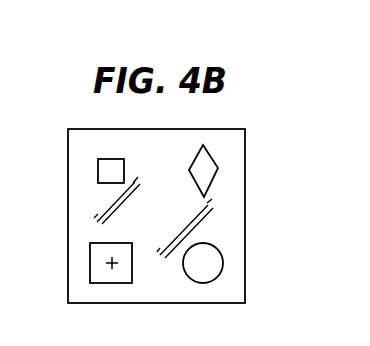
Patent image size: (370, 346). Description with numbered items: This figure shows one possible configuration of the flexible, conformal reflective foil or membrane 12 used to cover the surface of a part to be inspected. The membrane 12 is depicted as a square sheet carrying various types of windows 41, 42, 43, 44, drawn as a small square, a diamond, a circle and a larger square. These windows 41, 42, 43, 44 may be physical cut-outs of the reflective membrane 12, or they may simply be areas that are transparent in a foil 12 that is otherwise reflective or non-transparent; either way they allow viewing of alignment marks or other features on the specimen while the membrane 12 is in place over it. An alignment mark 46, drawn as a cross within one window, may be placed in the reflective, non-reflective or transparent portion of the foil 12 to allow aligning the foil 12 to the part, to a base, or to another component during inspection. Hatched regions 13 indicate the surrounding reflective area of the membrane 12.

The reflective membrane 12 is at (246, 178).
The hatched regions / surface area 13 is at (170, 219).
The window 41 is at (98, 173).
The window 42 is at (218, 168).
The window 43 is at (223, 259).
The alignment mark 46 is at (106, 267).
The window 44 is at (122, 283).